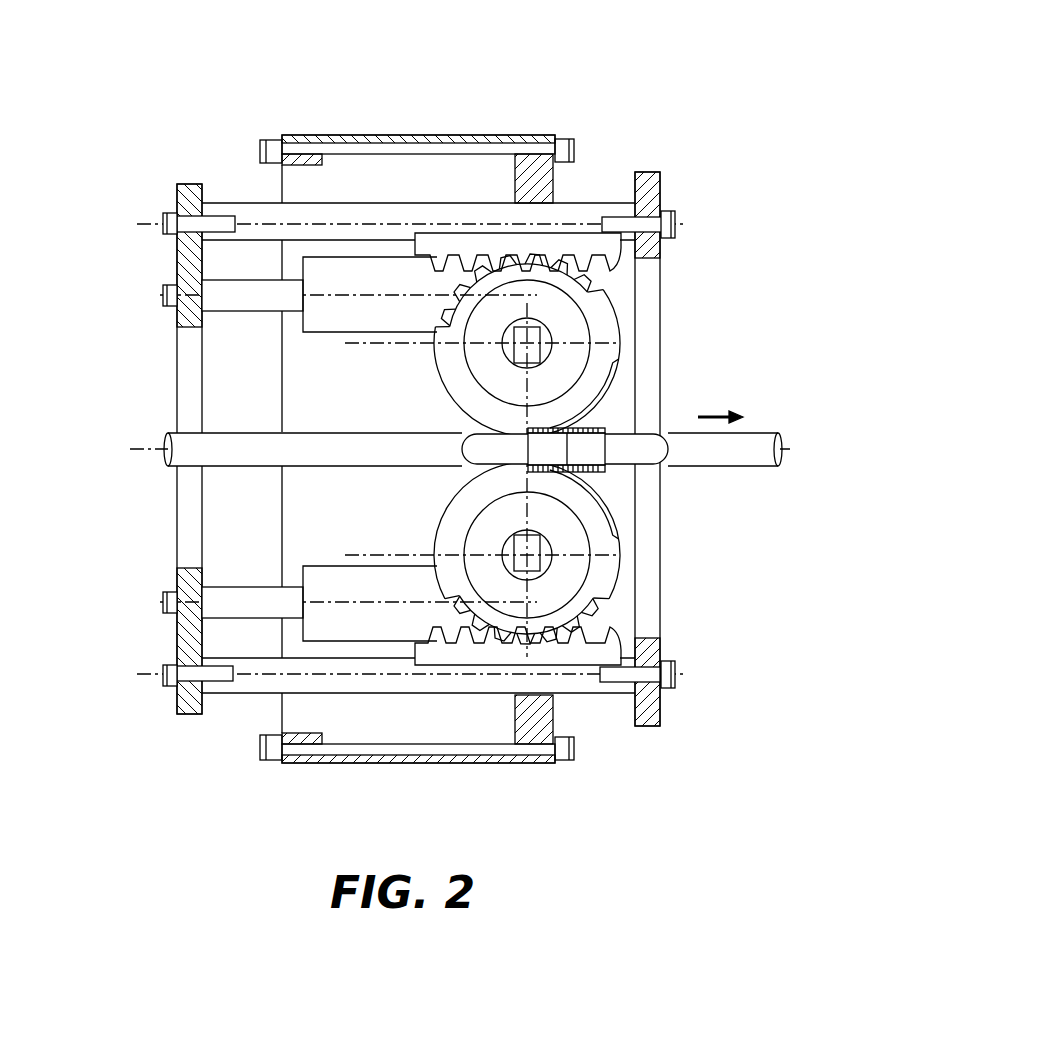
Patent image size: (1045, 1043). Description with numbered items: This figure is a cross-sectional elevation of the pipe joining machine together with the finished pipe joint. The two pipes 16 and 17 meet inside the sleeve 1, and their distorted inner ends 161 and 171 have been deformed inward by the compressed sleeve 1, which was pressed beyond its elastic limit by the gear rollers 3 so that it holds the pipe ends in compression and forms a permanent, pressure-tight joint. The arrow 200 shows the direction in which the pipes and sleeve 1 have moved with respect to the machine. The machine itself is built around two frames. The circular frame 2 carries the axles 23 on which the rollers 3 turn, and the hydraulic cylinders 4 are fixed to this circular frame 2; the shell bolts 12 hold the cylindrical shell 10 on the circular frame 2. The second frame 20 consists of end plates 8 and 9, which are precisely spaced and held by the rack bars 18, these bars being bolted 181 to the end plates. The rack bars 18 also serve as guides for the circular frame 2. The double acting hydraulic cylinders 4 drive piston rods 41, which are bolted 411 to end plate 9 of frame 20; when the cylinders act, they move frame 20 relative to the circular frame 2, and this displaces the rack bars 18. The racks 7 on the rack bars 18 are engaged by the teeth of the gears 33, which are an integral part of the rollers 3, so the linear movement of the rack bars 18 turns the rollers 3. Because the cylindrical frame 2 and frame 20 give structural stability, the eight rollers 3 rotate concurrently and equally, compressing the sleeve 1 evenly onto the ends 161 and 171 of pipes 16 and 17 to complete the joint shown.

The frame 20 is at (652, 98).
The bolts 181 is at (677, 218).
The rack bars 18 is at (588, 686).
The bolts 411 is at (162, 293).
The piston rods 41 is at (208, 593).
The hydraulic cylinders 4 is at (330, 580).
The pipe 16 is at (230, 442).
The pipe 17 is at (712, 444).
The distorted end 161 is at (525, 450).
The distorted end 171 is at (573, 447).
The arrow 200 is at (727, 406).
The sleeve 1 is at (603, 436).
The gears 33 is at (623, 300).
The rollers 3 is at (566, 592).
The axles 23 is at (542, 551).
The end plate 8 is at (647, 648).
The racks 7 is at (656, 692).
The circular frame 2 is at (548, 762).
The shell bolts 12 is at (442, 757).
The cylindrical shell 10 is at (335, 766).
The end plate 9 is at (187, 710).